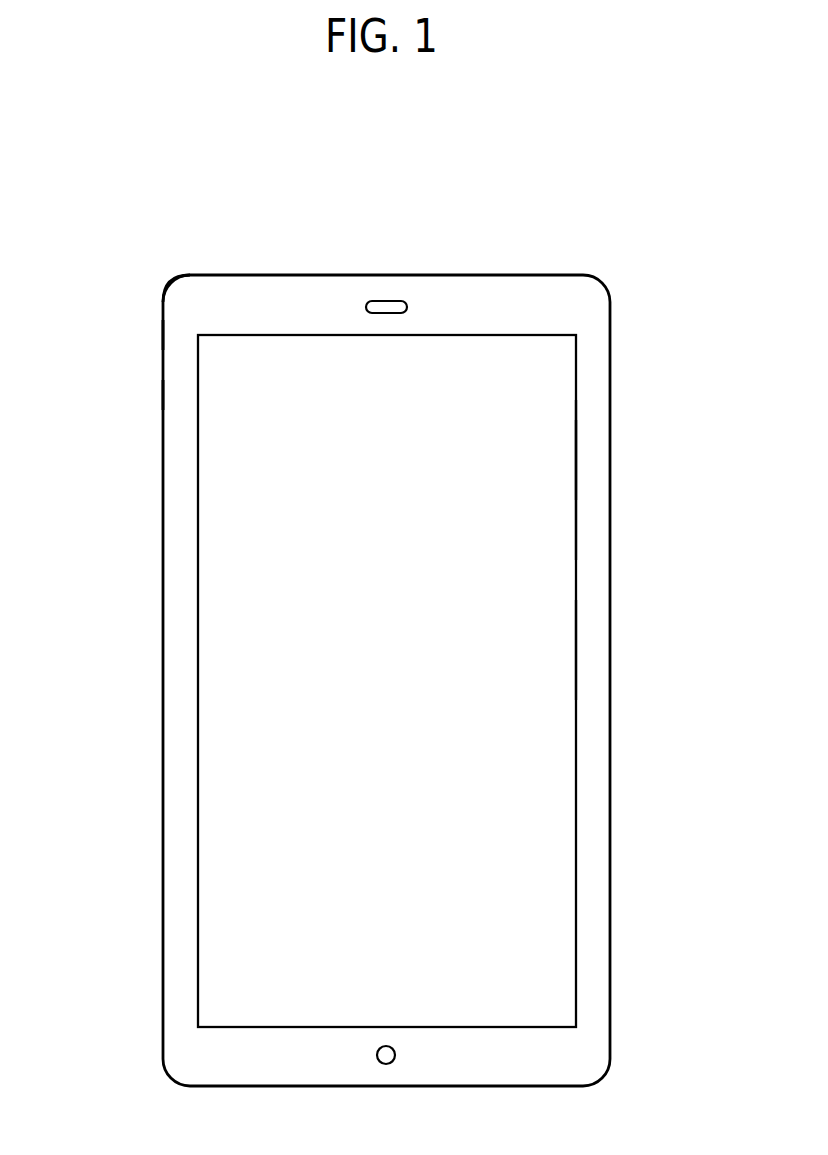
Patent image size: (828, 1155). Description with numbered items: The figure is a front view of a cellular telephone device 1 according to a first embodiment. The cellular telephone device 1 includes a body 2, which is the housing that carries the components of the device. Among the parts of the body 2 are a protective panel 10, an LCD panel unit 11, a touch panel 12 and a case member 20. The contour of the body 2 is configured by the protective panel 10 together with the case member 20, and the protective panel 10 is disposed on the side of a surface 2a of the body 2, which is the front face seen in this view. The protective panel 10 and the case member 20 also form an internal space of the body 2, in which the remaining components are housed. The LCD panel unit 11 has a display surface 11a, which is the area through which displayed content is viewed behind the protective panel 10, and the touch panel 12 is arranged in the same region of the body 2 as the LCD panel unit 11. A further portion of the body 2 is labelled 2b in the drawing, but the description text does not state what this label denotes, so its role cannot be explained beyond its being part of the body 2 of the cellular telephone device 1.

The cellular telephone device 1 is at (644, 168).
The body 2 is at (624, 293).
The surface 2a is at (183, 332).
The side surface of housing 2b is at (180, 277).
The case member 20 is at (183, 391).
The protective panel 10 is at (459, 735).
The LCD panel unit 11 is at (518, 521).
The display surface 11a is at (518, 453).
The touch panel 12 is at (459, 660).